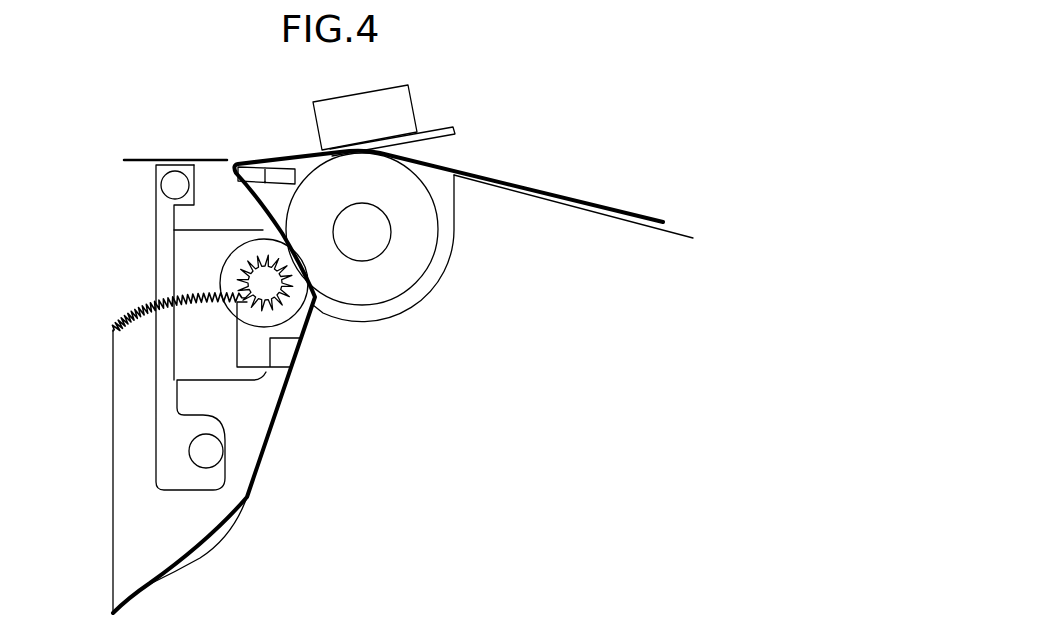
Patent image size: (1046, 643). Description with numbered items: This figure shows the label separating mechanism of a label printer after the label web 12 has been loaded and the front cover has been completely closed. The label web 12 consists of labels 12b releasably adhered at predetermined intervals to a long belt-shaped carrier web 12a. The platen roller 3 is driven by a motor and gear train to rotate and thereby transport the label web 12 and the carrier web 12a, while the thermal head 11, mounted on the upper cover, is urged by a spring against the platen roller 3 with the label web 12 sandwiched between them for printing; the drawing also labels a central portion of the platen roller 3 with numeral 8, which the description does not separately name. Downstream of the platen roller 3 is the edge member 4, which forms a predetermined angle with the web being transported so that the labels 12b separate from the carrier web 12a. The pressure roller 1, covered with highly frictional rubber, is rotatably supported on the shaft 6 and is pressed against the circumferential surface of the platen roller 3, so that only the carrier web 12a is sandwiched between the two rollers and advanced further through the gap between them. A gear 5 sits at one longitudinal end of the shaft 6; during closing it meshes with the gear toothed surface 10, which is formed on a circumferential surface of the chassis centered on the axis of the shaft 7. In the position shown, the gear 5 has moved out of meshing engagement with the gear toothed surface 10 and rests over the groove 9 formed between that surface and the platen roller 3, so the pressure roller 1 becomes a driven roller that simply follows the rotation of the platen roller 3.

The pressure roller 1 is at (232, 248).
The platen roller 3 is at (440, 222).
The edge member 4 is at (255, 167).
The gear 5 is at (322, 318).
The shaft 6 is at (258, 283).
The shaft 7 is at (213, 452).
The drum shaft 8 is at (392, 231).
The groove 9 is at (268, 368).
The gear toothed surface 10 is at (112, 329).
The thermal head 11 is at (414, 100).
The label web 12 is at (570, 193).
The carrier web 12a is at (253, 195).
The labels 12b is at (147, 158).